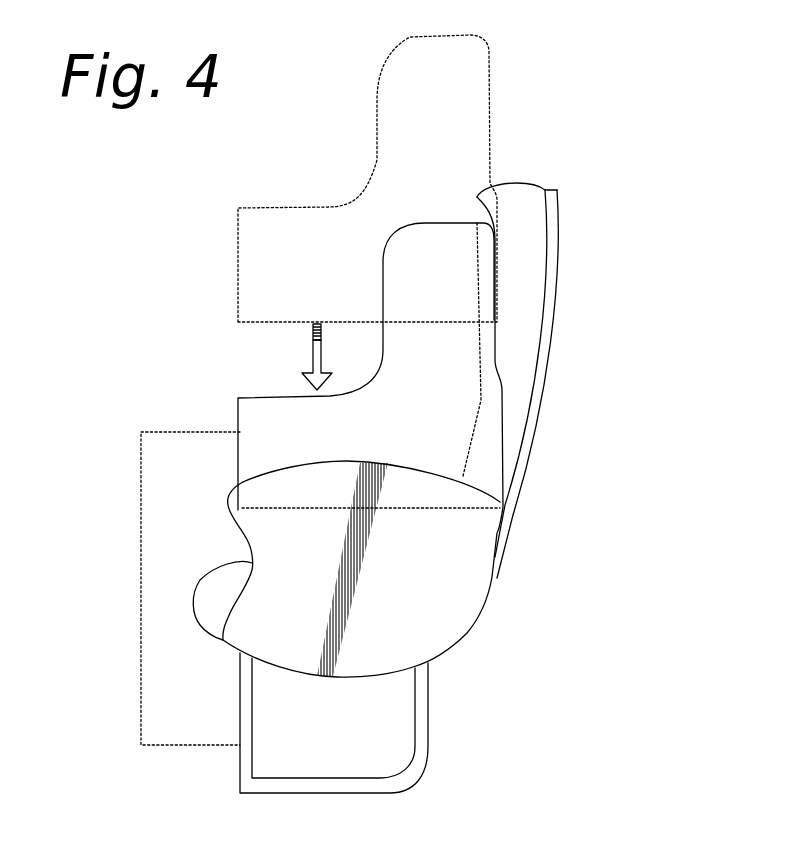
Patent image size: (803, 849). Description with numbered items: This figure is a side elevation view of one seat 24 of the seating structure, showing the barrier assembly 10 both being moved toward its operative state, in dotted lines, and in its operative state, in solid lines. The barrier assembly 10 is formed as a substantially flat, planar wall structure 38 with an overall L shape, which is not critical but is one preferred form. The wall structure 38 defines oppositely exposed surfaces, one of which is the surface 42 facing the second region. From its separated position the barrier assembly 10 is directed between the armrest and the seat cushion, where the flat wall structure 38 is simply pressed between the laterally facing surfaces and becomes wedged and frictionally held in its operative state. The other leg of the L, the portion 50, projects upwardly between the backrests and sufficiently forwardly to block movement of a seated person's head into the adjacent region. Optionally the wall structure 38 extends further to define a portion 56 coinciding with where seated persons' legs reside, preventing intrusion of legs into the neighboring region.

The barrier assembly 10 is at (460, 85).
The seat 24 is at (193, 398).
The wall structure 38 is at (523, 202).
The surface 42 is at (428, 431).
The portion 50 is at (443, 293).
The portion 56 is at (168, 697).